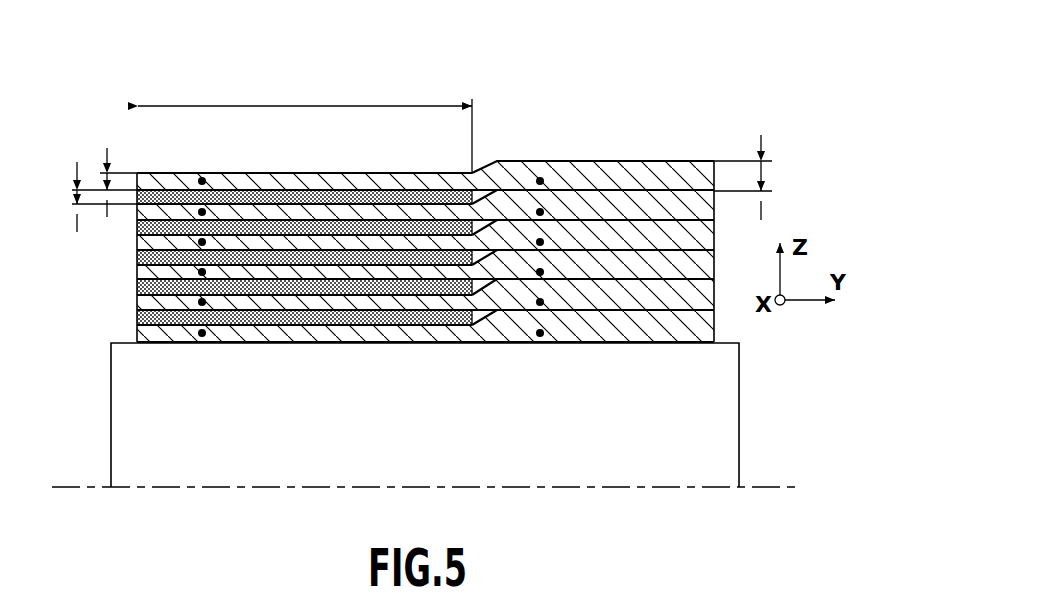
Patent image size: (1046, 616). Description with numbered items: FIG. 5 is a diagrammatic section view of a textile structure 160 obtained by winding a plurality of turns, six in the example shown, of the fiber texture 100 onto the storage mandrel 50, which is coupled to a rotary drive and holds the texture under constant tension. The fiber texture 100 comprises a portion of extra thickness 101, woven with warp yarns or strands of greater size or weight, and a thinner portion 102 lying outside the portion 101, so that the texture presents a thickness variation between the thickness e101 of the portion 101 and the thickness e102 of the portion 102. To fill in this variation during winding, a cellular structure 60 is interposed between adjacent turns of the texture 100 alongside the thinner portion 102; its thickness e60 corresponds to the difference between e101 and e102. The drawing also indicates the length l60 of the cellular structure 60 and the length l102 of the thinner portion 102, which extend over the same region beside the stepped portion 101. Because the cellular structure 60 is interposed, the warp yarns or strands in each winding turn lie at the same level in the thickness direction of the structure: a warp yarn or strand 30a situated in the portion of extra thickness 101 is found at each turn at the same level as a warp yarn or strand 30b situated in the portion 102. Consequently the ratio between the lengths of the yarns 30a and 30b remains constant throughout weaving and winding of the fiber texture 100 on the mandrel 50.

The textile structure 160 is at (184, 88).
The fiber texture 100 is at (681, 160).
The portion of extra thickness 101 is at (645, 213).
The portion of the texture lying outside the portion of extra thickness 102 is at (432, 180).
The cellular structure 60 is at (277, 197).
The warp yarn or strand situated in the portion of extra thickness 30a is at (545, 212).
The warp yarn or strand situated in the portion outside the extra thickness 30b is at (201, 178).
The storage mandrel 50 is at (715, 367).
The thickness of the cellular structure e60 is at (78, 232).
The thickness of the portion of extra thickness e101 is at (768, 132).
The thickness of the portion lying outside the portion of extra thickness e102 is at (107, 148).
The length of piezoelectric layer l60 is at (305, 118).
The length of thin electrode portion l102 is at (292, 104).